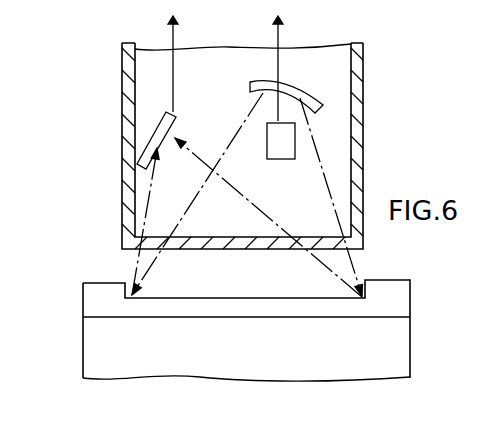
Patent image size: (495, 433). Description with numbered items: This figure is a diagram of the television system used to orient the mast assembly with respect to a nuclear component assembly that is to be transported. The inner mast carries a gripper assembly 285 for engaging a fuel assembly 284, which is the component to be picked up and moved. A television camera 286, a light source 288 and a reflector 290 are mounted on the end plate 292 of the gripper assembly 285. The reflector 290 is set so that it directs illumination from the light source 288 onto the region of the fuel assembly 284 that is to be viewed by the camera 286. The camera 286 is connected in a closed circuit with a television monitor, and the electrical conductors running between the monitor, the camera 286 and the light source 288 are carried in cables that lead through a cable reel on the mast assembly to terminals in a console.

The fuel assembly 284 is at (380, 298).
The gripper assembly 285 is at (122, 150).
The television camera 286 is at (178, 119).
The light source 288 is at (267, 150).
The reflector 290 is at (248, 84).
The end plate 292 is at (130, 249).